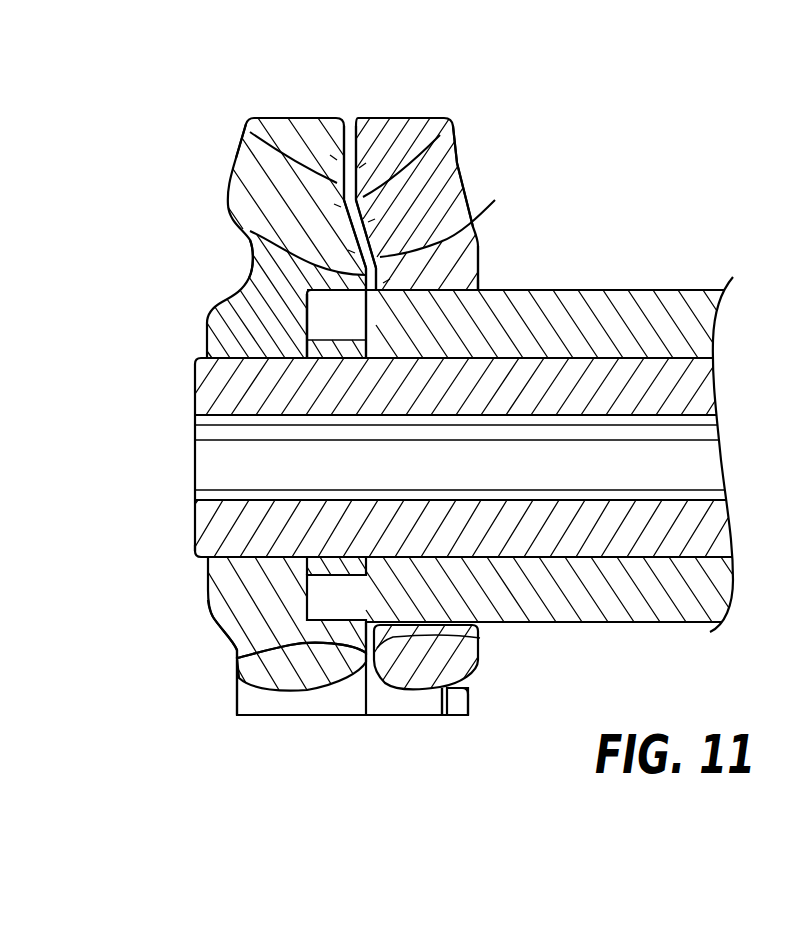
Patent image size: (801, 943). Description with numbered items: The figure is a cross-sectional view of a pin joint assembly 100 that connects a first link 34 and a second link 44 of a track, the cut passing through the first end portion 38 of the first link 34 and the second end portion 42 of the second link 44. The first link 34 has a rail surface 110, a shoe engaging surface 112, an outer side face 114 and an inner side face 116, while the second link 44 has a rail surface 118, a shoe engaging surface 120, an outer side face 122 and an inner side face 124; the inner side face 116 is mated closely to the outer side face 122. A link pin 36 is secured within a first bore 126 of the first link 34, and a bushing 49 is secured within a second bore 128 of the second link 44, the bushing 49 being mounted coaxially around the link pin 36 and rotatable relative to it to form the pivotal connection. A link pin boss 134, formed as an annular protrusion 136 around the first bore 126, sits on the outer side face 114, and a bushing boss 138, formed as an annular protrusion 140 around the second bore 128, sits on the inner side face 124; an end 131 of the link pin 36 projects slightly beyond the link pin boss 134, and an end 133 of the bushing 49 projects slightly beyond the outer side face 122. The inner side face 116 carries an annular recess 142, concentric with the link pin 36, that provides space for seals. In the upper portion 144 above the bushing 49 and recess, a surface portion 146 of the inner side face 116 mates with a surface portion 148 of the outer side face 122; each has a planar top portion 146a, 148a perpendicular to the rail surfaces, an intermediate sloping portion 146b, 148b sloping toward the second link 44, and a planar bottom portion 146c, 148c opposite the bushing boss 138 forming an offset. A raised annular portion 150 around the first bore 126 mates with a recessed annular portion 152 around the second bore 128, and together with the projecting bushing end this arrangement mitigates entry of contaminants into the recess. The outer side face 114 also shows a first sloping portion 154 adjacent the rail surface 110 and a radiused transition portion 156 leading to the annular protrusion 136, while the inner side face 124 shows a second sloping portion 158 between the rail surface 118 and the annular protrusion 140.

The pin joint assembly 100 is at (113, 333).
The rail surface 110 is at (252, 207).
The rail surface 118 is at (462, 172).
The upper portion 144 is at (352, 99).
The surface portion 146 is at (337, 183).
The planar top portion 146a is at (337, 160).
The intermediate sloping portion 146b is at (341, 207).
The planar bottom portion 146c is at (355, 253).
The surface portion 148 is at (363, 197).
The planar top portion 148a is at (359, 168).
The intermediate sloping portion 148b is at (368, 222).
The planar bottom portion 148c is at (383, 283).
The raised annular portion 150 is at (250, 231).
The first sloping portion 154 is at (232, 172).
The radiused transition portion 156 is at (251, 262).
The second sloping portion 158 is at (458, 165).
The annular protrusion 140 is at (495, 200).
The recessed annular portion 152 is at (478, 225).
The second bore 128 is at (480, 258).
The bushing boss 138 is at (479, 290).
The second link 44 is at (428, 187).
The first link 34 is at (259, 310).
The bushing 49 is at (536, 334).
The link pin 36 is at (425, 454).
The end of bushing 133 is at (368, 330).
The annular recess 142 is at (307, 332).
The end of link pin 131 is at (195, 388).
The first bore 126 is at (206, 562).
The link pin boss 134 is at (208, 575).
The annular protrusion 136 is at (208, 617).
The first end portion 38 is at (156, 657).
The inner side face 116 is at (237, 658).
The outer side face 114 is at (237, 690).
The shoe engaging surface 112 is at (367, 707).
The shoe engaging surface 120 is at (420, 717).
The outer side face 122 is at (480, 638).
The second end portion 42 is at (497, 663).
The inner side face 124 is at (468, 705).